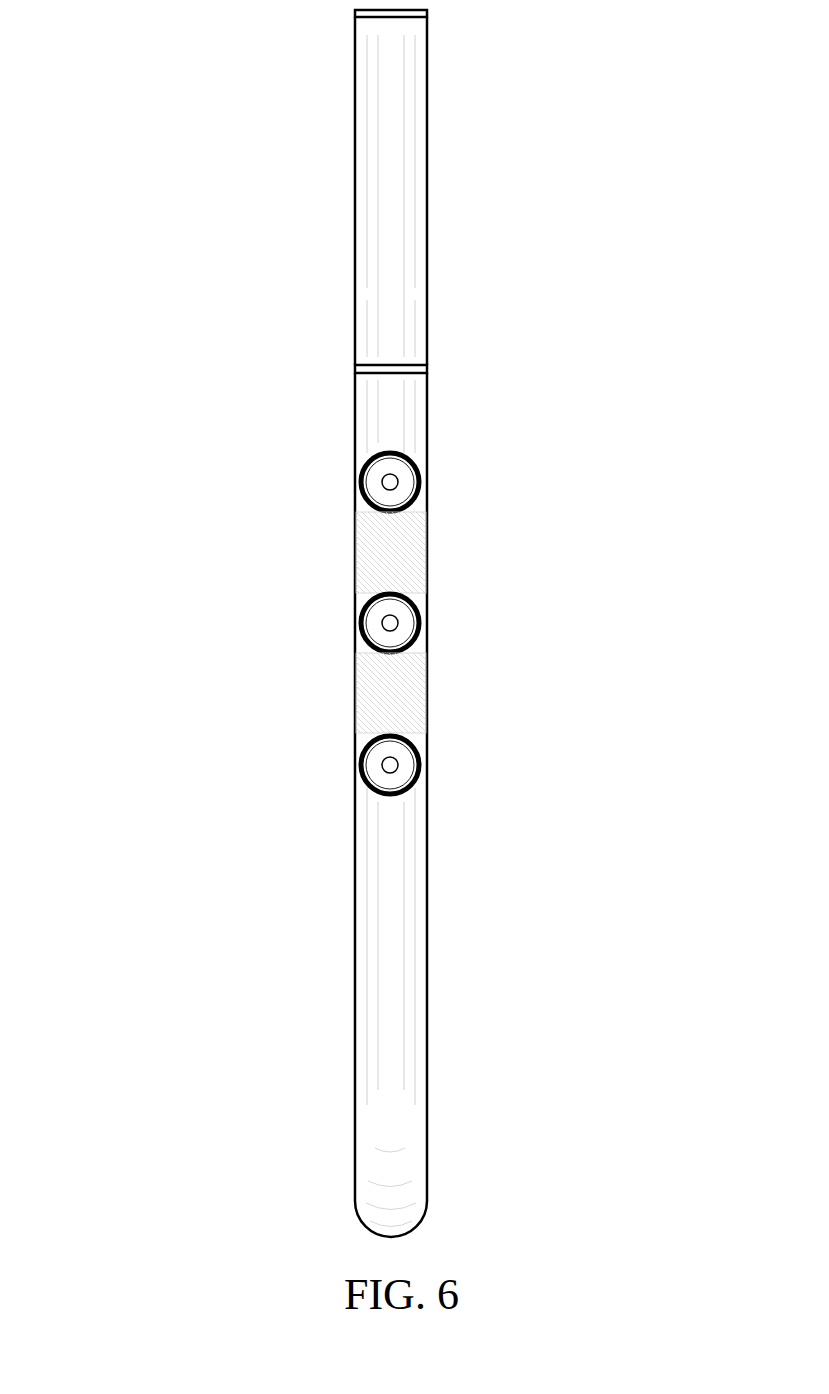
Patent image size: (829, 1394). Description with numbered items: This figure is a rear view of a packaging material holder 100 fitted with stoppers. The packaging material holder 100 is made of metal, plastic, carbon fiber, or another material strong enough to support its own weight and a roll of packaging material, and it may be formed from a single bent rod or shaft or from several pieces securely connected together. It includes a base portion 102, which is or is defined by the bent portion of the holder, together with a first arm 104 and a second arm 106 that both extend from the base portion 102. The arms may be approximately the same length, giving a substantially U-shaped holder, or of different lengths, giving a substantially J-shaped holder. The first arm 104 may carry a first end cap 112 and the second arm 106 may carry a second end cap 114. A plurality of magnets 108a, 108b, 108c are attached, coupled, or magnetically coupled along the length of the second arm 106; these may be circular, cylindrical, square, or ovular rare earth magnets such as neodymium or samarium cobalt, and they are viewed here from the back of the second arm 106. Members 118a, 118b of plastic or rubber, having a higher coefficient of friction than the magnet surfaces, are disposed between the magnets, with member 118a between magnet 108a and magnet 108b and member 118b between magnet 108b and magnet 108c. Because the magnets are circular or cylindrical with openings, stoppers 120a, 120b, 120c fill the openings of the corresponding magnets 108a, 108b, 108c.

The packaging material holder 100 is at (143, 56).
The base portion 102 is at (355, 1178).
The first arm 104 is at (355, 162).
The second arm 106 is at (355, 970).
The magnet 108a is at (361, 486).
The magnet 108b is at (361, 625).
The magnet 108c is at (361, 755).
The first end cap 112 is at (428, 12).
The second end cap 114 is at (355, 370).
The member 118a is at (355, 549).
The member 118b is at (355, 693).
The stopper 120a is at (399, 484).
The stopper 120b is at (399, 625).
The stopper 120c is at (399, 767).